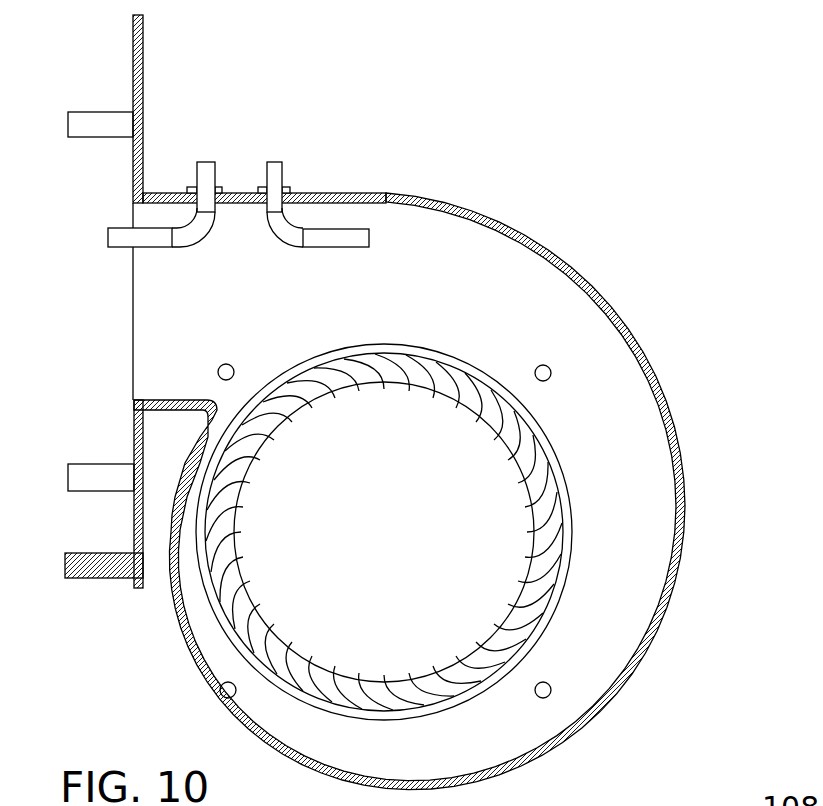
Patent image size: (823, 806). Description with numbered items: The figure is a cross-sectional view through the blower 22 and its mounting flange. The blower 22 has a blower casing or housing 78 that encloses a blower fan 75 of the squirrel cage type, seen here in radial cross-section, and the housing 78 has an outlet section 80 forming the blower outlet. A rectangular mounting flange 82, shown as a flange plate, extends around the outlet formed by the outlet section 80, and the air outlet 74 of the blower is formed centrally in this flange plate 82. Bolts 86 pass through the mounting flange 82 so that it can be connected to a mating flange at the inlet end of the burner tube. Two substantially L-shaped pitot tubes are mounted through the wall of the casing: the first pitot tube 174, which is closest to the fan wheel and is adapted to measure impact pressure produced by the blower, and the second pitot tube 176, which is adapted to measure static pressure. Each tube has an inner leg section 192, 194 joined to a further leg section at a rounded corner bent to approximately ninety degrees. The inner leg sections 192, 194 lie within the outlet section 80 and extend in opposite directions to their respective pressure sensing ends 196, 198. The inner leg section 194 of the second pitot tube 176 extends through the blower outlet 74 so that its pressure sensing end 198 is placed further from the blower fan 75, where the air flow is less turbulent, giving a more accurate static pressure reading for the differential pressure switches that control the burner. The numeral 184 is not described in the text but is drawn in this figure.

The blower 22 is at (379, 395).
The air outlet 74 is at (132, 320).
The blower fan 75 is at (553, 497).
The blower casing or housing 78 is at (637, 332).
The outlet section 80 is at (438, 422).
The mounting flange 82 is at (143, 60).
The bolts 86 is at (102, 124).
The first pitot tube 174 is at (317, 194).
The second pitot tube 176 is at (183, 196).
The housing top plate 184 is at (317, 193).
The inner leg section 192 is at (320, 247).
The inner leg section 194 is at (152, 245).
The pressure sensing end 196 is at (372, 239).
The pressure sensing end 198 is at (108, 238).